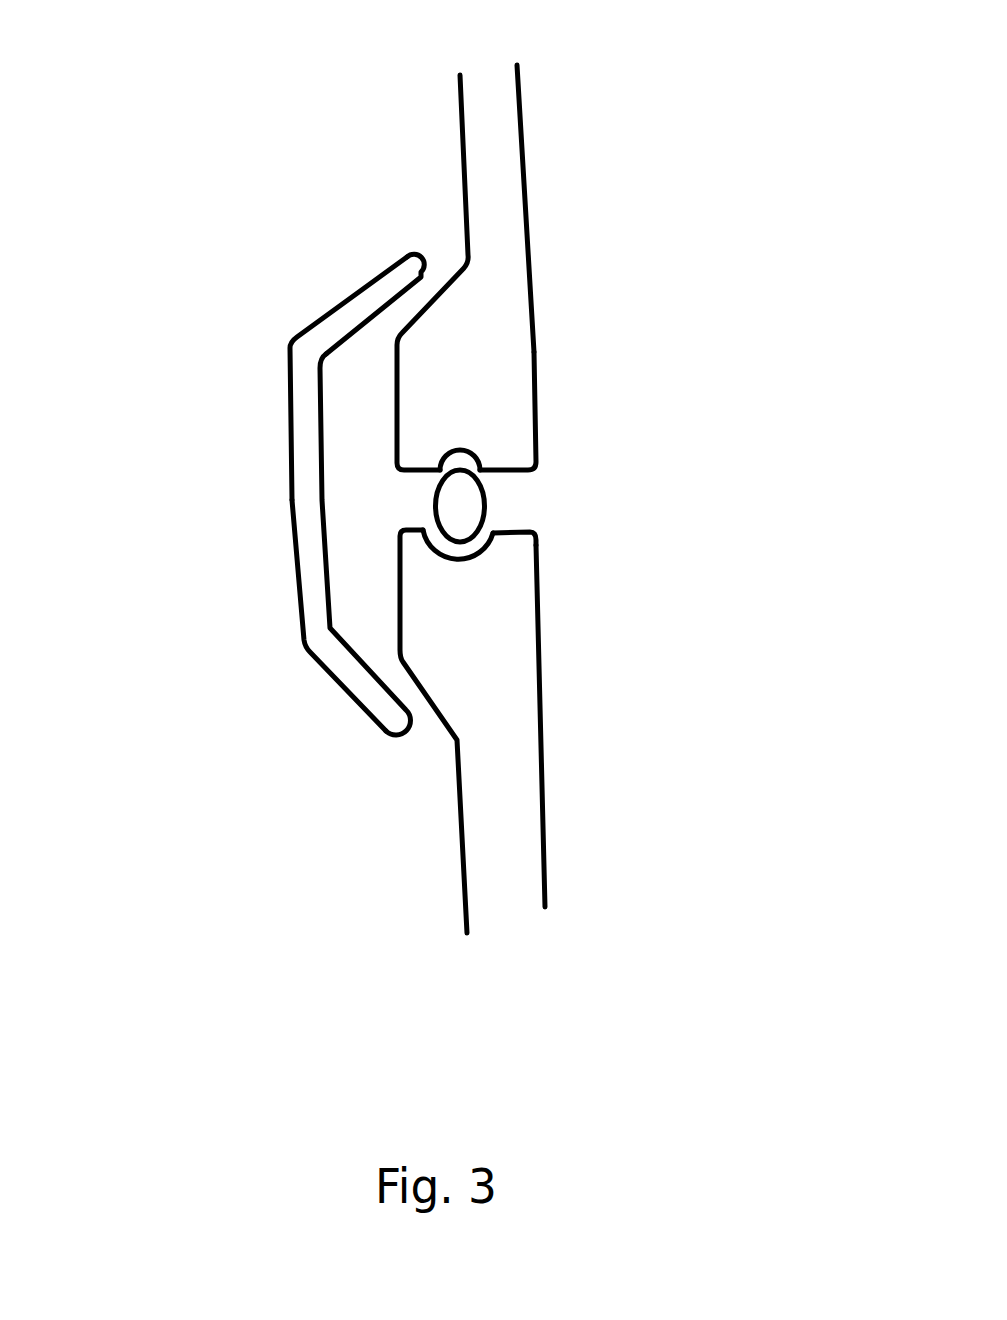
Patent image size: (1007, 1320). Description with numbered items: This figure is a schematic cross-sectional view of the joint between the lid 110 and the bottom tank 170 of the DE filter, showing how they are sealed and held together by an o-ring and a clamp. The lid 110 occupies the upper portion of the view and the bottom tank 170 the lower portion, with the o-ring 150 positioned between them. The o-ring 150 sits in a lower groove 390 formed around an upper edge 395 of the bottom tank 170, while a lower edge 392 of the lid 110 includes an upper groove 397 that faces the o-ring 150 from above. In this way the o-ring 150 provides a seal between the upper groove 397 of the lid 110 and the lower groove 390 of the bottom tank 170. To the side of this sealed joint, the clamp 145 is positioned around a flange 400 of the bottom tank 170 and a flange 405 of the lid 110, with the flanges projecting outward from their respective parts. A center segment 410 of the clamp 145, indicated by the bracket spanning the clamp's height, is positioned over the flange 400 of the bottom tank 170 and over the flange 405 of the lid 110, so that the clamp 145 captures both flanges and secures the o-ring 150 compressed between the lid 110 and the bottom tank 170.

The lid 110 is at (485, 148).
The bottom tank 170 is at (508, 858).
The o-ring 150 is at (458, 507).
The upper groove 397 is at (458, 448).
The lower edge 392 is at (512, 467).
The upper edge 395 is at (523, 533).
The lower groove 390 is at (470, 565).
The clamp 145 is at (320, 673).
The flange 400 is at (417, 680).
The flange 405 is at (410, 327).
The center segment 410 is at (223, 517).